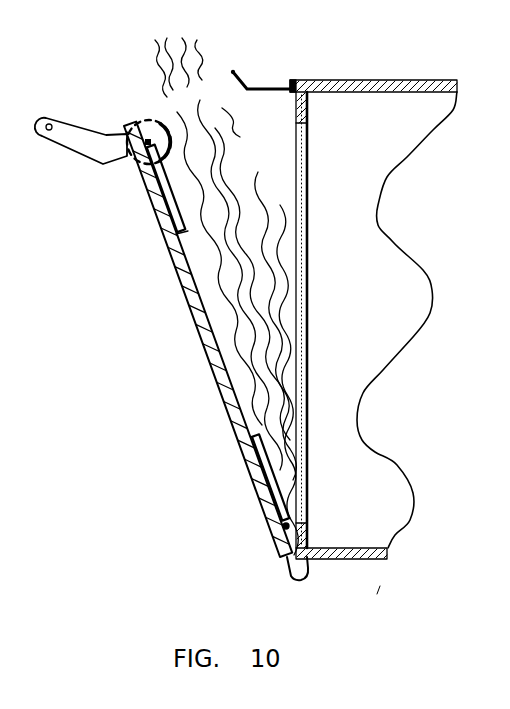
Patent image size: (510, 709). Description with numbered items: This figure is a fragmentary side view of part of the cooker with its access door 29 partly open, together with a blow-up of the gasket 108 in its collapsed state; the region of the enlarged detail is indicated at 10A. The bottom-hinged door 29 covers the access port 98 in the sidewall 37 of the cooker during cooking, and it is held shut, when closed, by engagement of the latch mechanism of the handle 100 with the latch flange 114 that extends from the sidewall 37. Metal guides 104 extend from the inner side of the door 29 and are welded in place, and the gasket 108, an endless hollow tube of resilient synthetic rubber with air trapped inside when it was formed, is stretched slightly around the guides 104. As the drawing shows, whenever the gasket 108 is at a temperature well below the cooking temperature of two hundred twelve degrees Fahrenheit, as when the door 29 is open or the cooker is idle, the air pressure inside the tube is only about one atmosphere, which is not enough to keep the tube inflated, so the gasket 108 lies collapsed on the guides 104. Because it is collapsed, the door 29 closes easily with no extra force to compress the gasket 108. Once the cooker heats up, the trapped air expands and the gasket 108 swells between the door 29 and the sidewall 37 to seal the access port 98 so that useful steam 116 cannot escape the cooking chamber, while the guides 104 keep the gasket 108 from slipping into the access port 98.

The air flow passage 10A is at (167, 126).
The door 29 is at (199, 338).
The sidewall 37 is at (296, 113).
The access port 98 is at (303, 296).
The handle 100 is at (105, 166).
The guides 104 is at (165, 228).
The gasket 108 is at (156, 122).
The latch flange 114 is at (247, 80).
The steam 116 is at (200, 33).